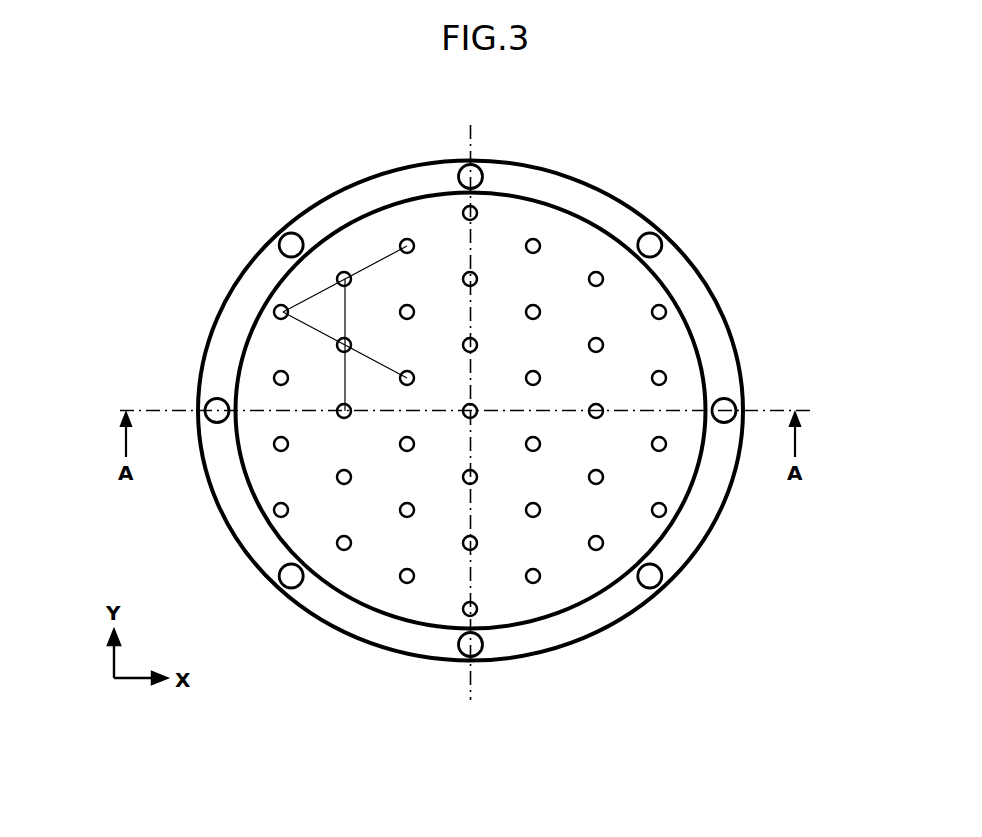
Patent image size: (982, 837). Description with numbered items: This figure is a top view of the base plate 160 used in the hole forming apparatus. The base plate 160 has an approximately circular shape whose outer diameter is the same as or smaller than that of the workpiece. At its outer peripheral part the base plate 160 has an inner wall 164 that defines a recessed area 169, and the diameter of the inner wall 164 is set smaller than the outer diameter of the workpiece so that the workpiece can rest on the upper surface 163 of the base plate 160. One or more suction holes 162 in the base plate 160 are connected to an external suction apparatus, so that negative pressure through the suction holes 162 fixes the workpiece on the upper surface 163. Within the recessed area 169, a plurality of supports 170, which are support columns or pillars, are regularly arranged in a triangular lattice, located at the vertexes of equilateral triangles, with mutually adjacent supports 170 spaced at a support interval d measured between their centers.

The base plate 160 is at (840, 146).
The suction hole 162 is at (290, 580).
The upper surface 163 is at (627, 222).
The inner wall 164 is at (272, 446).
The recessed area 169 is at (377, 563).
The support 170 is at (664, 374).